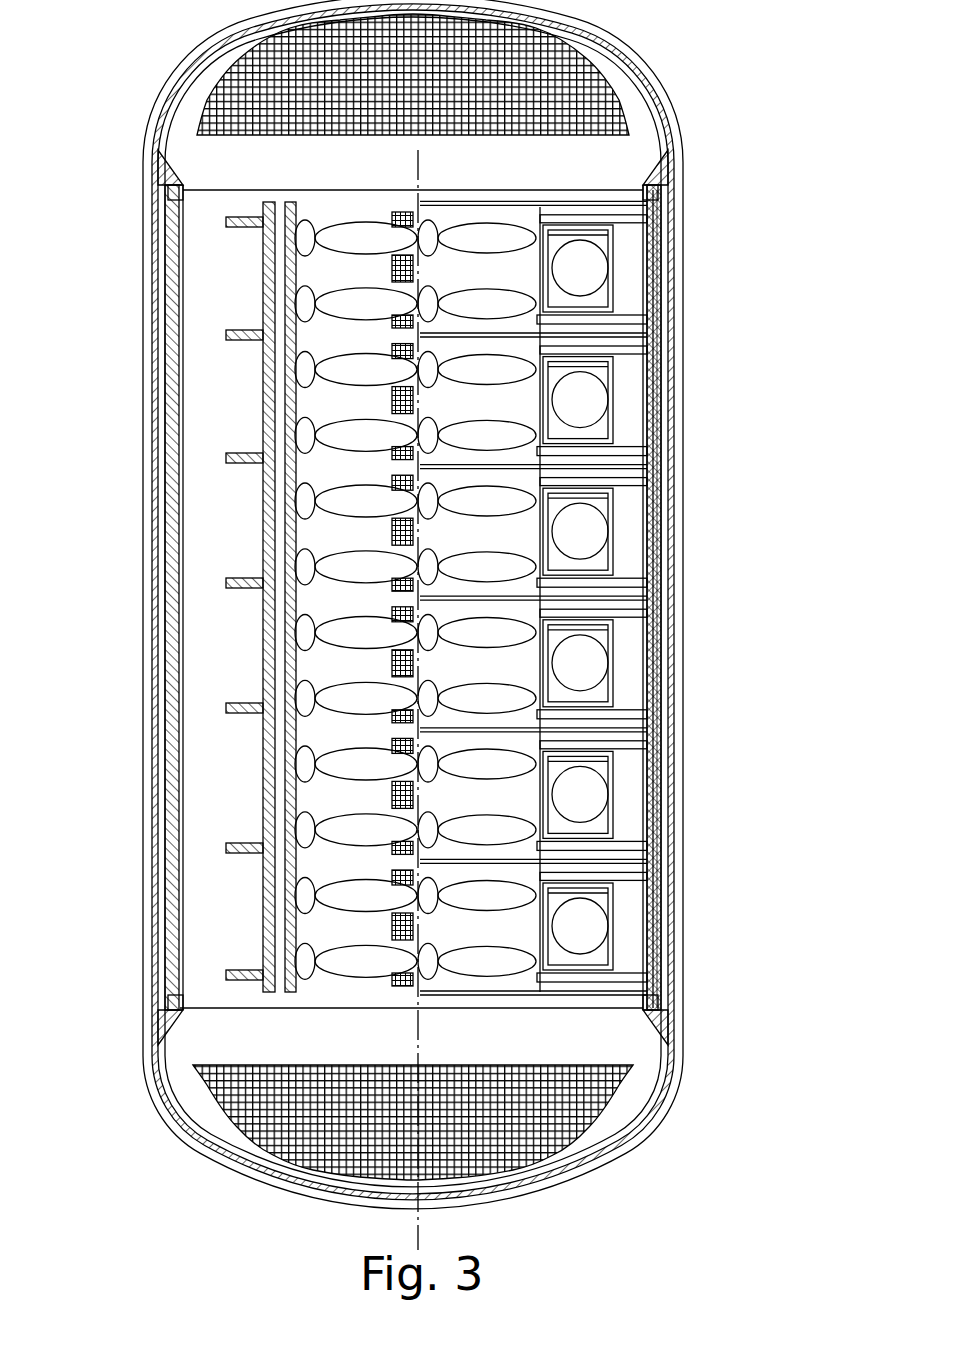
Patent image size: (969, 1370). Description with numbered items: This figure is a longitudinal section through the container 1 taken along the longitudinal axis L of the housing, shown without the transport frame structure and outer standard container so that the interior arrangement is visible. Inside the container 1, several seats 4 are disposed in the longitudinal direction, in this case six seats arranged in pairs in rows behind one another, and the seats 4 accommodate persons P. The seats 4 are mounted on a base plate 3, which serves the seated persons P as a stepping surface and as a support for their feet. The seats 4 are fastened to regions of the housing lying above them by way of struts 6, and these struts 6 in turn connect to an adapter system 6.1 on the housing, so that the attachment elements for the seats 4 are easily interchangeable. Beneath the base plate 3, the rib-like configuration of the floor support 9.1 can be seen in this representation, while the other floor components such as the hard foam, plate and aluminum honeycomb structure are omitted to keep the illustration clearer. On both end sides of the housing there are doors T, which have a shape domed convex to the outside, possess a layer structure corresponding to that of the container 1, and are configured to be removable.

The container 1 is at (712, 300).
The door T is at (617, 160).
The person P is at (512, 398).
The strut 6 is at (610, 745).
The adapter system 6.1 is at (650, 528).
The floor support 9.1 is at (263, 921).
The base plate 3 is at (293, 995).
The seat 4 is at (427, 963).
The longitudinal axis L is at (429, 700).